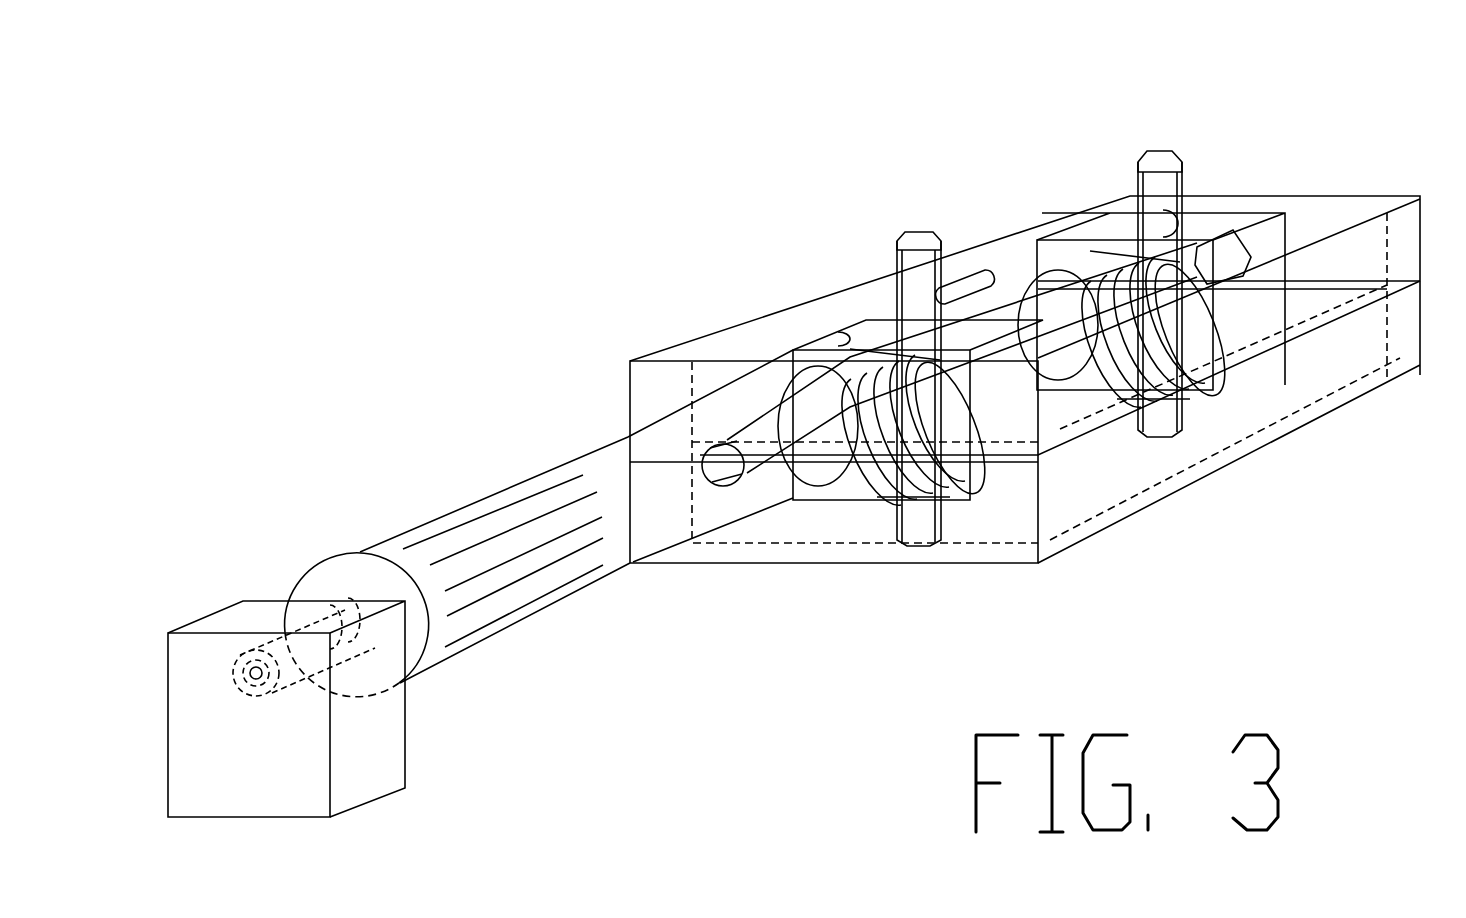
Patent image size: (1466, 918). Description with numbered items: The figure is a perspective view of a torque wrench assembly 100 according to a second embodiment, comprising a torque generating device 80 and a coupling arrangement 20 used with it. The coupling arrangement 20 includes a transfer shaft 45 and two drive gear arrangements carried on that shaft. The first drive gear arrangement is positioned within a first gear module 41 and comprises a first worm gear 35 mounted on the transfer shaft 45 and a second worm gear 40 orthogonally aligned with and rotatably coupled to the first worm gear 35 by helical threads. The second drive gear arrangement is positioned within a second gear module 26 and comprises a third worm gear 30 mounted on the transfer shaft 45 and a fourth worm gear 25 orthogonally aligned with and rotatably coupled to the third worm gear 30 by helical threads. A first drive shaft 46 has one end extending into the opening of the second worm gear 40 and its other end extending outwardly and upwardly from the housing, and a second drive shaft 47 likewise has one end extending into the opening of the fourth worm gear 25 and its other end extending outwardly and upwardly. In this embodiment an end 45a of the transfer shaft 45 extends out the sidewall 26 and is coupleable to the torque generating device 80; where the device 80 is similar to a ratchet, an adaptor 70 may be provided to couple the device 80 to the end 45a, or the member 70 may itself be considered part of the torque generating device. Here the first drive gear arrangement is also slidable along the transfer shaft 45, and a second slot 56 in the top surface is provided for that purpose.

The torque wrench assembly 100 is at (366, 132).
The coupling arrangement 20 is at (1043, 337).
The fourth worm gear 25 is at (1253, 412).
The second gear module 26 is at (1187, 249).
The third worm gear 30 is at (1071, 237).
The first worm gear 35 is at (739, 368).
The second worm gear 40 is at (812, 526).
The first gear module 41 is at (866, 356).
The transfer shaft 45 is at (989, 280).
The end of transfer shaft 45a is at (614, 382).
The first drive shaft 46 is at (795, 355).
The second drive shaft 47 is at (1207, 241).
The second slot 56 is at (873, 191).
The adaptor 70 is at (431, 533).
The torque generating device 80 is at (369, 709).